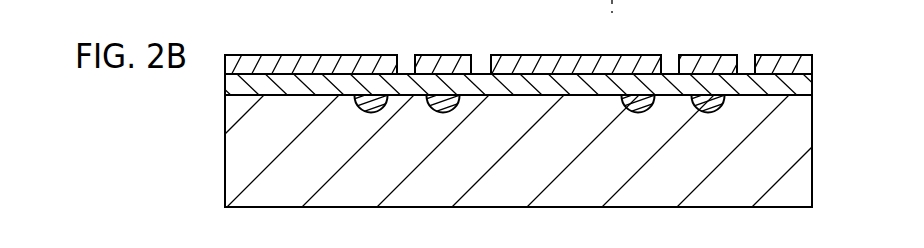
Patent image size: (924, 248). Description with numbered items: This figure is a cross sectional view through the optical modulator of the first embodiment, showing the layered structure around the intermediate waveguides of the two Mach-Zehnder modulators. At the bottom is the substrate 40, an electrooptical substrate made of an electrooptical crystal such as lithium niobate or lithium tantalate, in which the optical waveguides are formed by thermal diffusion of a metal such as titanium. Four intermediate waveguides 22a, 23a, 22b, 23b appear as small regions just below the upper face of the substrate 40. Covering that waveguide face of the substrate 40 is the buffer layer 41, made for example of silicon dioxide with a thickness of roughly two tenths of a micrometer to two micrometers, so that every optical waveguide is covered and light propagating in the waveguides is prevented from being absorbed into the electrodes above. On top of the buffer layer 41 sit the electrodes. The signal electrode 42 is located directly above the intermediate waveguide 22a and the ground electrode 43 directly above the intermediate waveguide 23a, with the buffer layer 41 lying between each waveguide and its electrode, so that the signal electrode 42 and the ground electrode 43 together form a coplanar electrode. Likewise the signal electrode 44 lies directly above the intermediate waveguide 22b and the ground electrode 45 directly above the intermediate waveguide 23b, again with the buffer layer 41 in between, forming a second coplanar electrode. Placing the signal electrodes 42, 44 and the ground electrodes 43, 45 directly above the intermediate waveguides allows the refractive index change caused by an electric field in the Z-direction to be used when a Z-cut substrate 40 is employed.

The substrate 40 is at (805, 166).
The buffer layer 41 is at (805, 88).
The signal electrode 42 is at (709, 55).
The ground electrode 43 is at (585, 55).
The signal electrode 44 is at (448, 55).
The ground electrode 45 is at (313, 55).
The intermediate waveguide 22a is at (706, 112).
The intermediate waveguide 22b is at (441, 112).
The intermediate waveguide 23a is at (636, 112).
The intermediate waveguide 23b is at (369, 112).